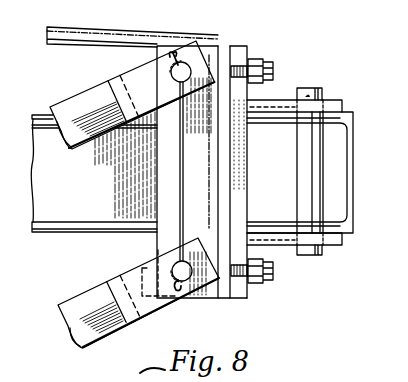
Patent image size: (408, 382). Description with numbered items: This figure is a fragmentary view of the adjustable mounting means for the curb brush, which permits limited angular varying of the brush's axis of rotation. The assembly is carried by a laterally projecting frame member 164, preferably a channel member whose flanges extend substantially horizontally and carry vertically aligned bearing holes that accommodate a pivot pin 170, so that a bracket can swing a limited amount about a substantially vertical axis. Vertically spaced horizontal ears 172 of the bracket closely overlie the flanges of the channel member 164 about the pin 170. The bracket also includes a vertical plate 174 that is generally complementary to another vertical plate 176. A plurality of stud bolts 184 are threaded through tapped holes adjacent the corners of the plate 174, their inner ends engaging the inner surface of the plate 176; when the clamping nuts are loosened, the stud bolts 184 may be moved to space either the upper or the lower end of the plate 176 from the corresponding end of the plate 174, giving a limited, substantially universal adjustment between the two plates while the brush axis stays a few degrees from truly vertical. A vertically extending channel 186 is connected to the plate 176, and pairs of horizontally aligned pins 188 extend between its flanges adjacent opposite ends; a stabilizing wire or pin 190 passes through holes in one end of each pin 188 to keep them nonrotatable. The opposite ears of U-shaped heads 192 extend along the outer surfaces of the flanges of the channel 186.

The frame member 164 is at (350, 160).
The pin 170 is at (312, 88).
The ears 172 is at (337, 100).
The vertical plate 174 is at (240, 300).
The vertical plate 176 is at (224, 50).
The stud bolts 184 is at (270, 66).
The channel 186 is at (167, 195).
The pins 188 is at (176, 66).
The stabilizing wire or pin 190 is at (157, 243).
The U-shaped heads 192 is at (135, 78).